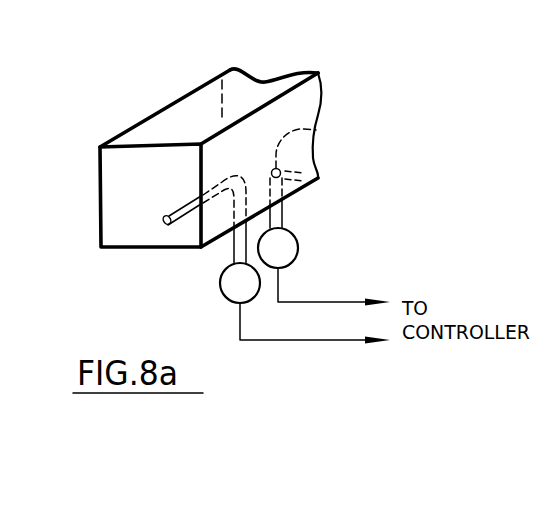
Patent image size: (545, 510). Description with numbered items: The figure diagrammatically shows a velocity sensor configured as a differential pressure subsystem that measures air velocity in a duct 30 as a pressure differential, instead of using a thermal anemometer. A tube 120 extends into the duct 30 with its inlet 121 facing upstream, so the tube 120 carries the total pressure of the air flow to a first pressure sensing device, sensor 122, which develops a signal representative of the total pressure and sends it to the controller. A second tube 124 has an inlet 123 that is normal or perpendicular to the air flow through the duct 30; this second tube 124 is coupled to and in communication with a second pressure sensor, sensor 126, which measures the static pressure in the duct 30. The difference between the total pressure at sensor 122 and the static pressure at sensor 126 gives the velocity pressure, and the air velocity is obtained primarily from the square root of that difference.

The duct 30 is at (194, 90).
The tube 120 is at (178, 248).
The inlet 121 is at (141, 248).
The sensor 122 is at (222, 288).
The inlet 123 is at (367, 113).
The second tube 124 is at (314, 179).
The sensor 126 is at (297, 238).